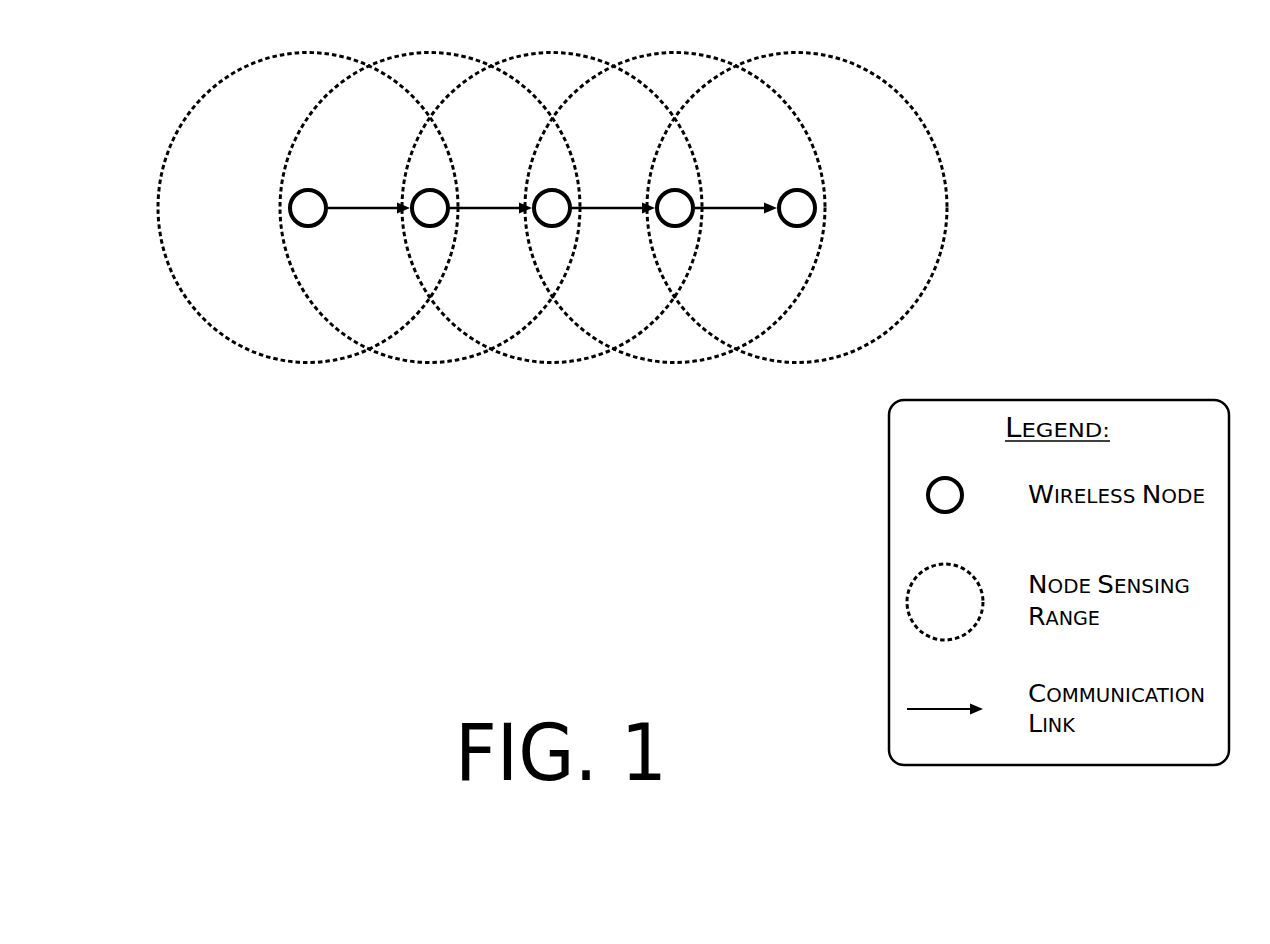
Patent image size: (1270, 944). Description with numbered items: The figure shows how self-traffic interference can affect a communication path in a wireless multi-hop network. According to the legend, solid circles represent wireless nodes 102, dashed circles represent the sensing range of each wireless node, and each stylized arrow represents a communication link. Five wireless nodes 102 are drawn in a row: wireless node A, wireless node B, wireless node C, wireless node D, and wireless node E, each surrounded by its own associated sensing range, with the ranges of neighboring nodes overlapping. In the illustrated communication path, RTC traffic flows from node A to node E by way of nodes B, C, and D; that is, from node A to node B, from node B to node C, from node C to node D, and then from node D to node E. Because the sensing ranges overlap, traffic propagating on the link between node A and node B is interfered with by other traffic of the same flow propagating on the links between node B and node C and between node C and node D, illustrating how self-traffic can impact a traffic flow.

The wireless nodes 102 is at (266, 191).
The wireless node A is at (308, 208).
The wireless node B is at (430, 208).
The wireless node C is at (552, 208).
The wireless node D is at (675, 208).
The wireless node E is at (797, 208).